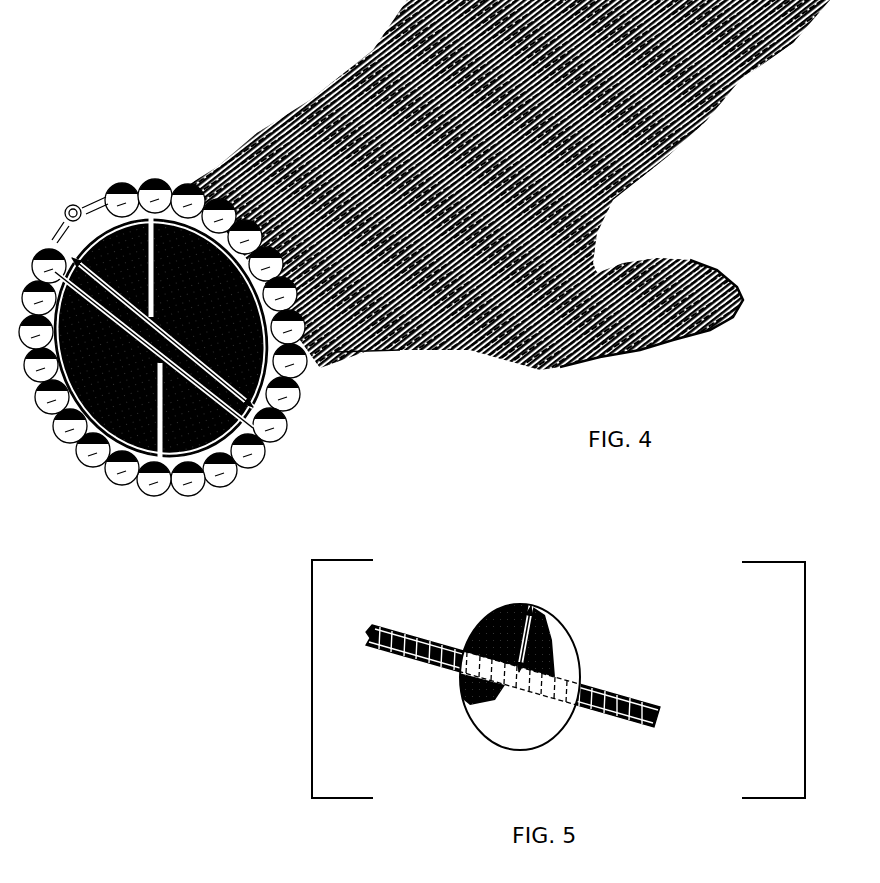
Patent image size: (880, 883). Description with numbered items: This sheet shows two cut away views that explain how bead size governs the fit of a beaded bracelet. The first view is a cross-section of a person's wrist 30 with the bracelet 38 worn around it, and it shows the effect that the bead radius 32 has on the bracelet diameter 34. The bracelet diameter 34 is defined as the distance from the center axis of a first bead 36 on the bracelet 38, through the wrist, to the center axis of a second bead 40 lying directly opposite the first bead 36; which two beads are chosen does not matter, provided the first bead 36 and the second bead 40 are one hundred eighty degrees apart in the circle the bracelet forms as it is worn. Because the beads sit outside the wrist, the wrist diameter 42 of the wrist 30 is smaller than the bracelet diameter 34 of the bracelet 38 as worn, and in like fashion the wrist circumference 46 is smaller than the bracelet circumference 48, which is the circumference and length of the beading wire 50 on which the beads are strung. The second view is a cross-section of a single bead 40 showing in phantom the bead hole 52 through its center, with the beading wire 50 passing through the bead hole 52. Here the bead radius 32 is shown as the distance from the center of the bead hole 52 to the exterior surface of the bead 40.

In FIG. 4, the human wrist 30 is at (253, 190).
In FIG. 4, the bead radius 32 is at (300, 372).
In FIG. 5, the bead radius 32 is at (528, 640).
In FIG. 4, the bracelet diameter 34 is at (160, 363).
In FIG. 4, the first bead 36 is at (40, 238).
In FIG. 4, the bracelet 38 is at (363, 353).
In FIG. 4, the second bead 40 is at (285, 456).
In FIG. 5, the second bead 40 is at (462, 707).
In FIG. 4, the wrist diameter 42 is at (151, 317).
In FIG. 4, the wrist circumference 46 is at (113, 437).
In FIG. 4, the bracelet circumference 48 is at (50, 372).
In FIG. 4, the beading wire 50 is at (36, 332).
In FIG. 5, the beading wire 50 is at (668, 712).
In FIG. 5, the bead hole 52 is at (548, 683).